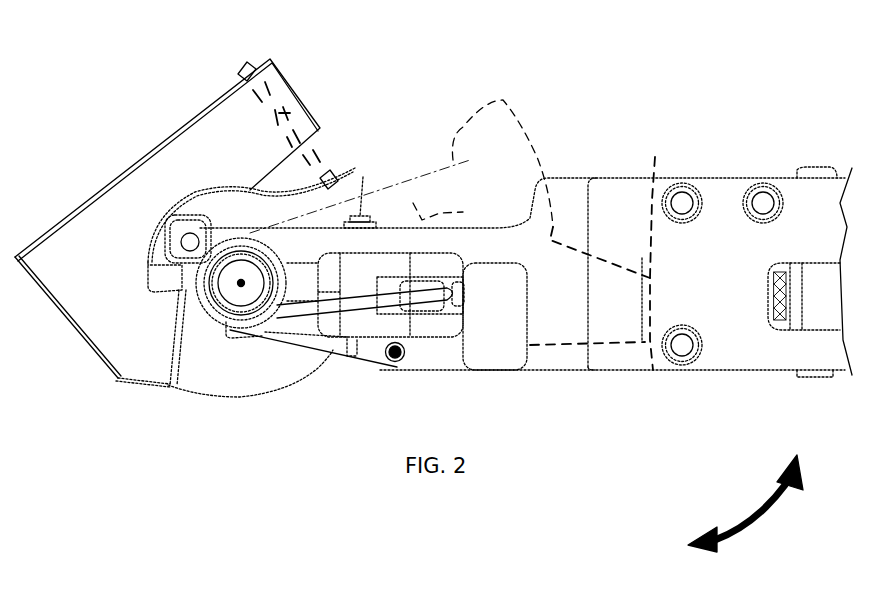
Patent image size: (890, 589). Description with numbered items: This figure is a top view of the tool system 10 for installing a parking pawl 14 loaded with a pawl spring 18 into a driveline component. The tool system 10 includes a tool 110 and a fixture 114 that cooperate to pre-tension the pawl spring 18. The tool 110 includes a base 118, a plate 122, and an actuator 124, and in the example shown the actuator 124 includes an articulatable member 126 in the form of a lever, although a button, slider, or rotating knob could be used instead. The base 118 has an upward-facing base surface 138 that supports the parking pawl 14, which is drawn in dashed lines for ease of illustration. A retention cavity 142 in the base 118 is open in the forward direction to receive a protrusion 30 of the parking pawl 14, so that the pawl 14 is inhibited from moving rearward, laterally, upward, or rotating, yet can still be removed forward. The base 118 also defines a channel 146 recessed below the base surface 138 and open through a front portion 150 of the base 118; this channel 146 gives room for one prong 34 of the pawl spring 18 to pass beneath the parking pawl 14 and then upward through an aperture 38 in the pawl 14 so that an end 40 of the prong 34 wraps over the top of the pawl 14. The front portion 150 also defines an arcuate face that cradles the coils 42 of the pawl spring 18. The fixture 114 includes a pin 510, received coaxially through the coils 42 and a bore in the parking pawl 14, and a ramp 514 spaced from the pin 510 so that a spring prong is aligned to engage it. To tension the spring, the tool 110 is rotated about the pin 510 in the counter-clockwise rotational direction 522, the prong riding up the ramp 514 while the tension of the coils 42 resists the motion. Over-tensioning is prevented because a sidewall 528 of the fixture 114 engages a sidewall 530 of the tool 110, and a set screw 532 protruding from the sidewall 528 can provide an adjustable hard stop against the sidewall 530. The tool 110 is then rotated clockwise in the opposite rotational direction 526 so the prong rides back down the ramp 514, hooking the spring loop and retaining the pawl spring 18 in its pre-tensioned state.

The tool system 10 is at (150, 82).
The parking pawl 14 is at (453, 153).
The pawl spring 18 is at (245, 245).
The protrusion 30 is at (650, 249).
The prong 34 is at (366, 310).
The aperture 38 is at (413, 203).
The end 40 is at (467, 322).
The coils 42 is at (257, 326).
The tool 110 is at (612, 173).
The fixture 114 is at (105, 195).
The base 118 is at (725, 200).
The plate 122 is at (212, 225).
The actuator 124 is at (780, 259).
The articulatable member 126 is at (830, 273).
The base surface 138 is at (570, 357).
The retention cavity 142 is at (653, 370).
The channel 146 is at (303, 326).
The front portion 150 is at (222, 340).
The pin 510 is at (230, 288).
The ramp 514 is at (160, 277).
The rotational direction 522 is at (803, 470).
The opposite rotational direction 526 is at (700, 538).
The sidewall 528 is at (345, 172).
The sidewall 530 is at (497, 229).
The set screw 532 is at (297, 108).